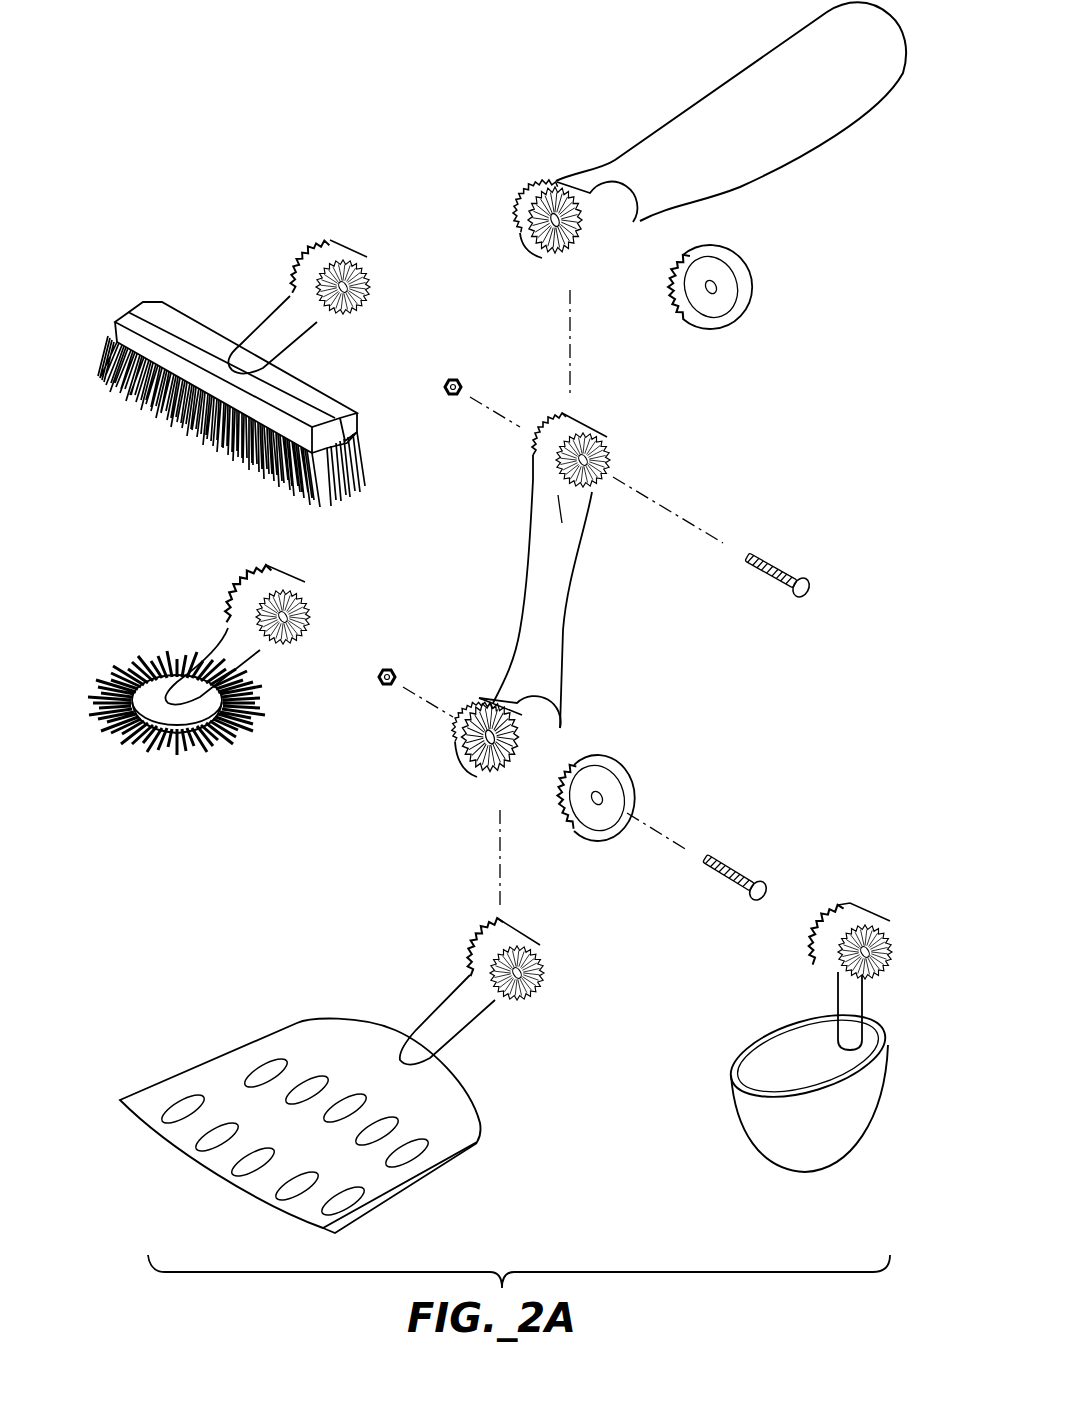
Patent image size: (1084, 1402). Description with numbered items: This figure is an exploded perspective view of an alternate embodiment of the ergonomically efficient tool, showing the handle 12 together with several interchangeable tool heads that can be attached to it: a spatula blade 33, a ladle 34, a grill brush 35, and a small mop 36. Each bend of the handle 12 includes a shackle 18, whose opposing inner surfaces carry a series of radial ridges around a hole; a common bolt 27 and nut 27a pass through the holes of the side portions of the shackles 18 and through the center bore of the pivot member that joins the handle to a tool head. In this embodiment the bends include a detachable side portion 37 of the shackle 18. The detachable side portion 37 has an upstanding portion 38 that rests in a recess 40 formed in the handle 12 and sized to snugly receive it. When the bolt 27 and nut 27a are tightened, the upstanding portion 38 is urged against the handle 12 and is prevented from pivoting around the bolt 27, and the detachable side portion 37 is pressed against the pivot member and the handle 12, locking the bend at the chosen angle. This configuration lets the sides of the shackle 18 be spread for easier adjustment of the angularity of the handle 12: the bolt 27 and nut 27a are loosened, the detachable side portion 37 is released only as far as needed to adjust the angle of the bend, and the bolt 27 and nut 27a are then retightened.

The handle 12 is at (690, 97).
The shackle 18 is at (537, 195).
The bolt 27 is at (805, 577).
The nut 27a is at (455, 380).
The spatula blade 33 is at (455, 1160).
The ladle 34 is at (755, 1040).
The grill brush 35 is at (322, 393).
The small mop 36 is at (150, 685).
The detachable side portion 37 is at (700, 327).
The upstanding portion 38 is at (665, 540).
The recess 40 is at (608, 205).